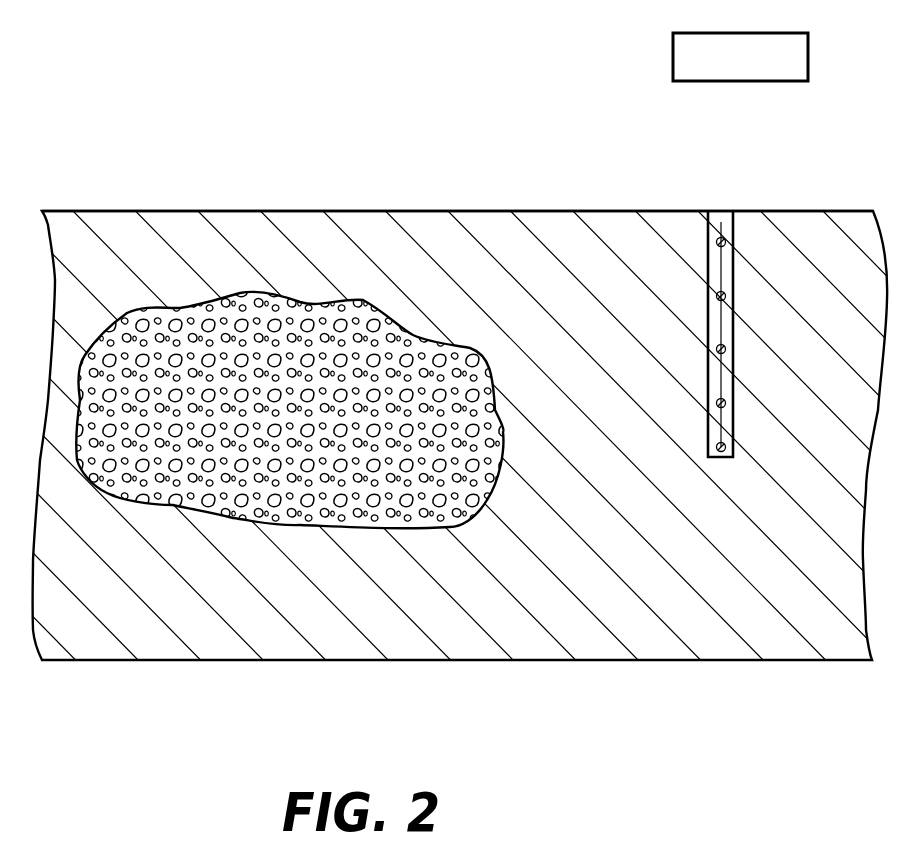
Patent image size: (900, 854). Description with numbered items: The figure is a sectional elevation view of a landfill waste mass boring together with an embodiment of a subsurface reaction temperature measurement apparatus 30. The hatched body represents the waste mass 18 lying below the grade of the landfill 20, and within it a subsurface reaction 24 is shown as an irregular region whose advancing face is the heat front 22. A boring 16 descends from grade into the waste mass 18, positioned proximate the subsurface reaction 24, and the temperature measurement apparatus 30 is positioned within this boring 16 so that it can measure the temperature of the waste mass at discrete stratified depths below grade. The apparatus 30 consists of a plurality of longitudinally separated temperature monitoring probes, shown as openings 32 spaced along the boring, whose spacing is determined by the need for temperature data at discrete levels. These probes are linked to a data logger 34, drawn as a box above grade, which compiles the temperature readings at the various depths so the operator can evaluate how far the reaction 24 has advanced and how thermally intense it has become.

The boring 16 is at (737, 260).
The waste mass 18 is at (798, 642).
The landfill 20 is at (452, 211).
The heat front 22 is at (503, 432).
The subsurface reaction 24 is at (325, 333).
The temperature measurement apparatus 30 is at (714, 220).
The perforations 32 is at (708, 296).
The data logger 34 is at (740, 57).